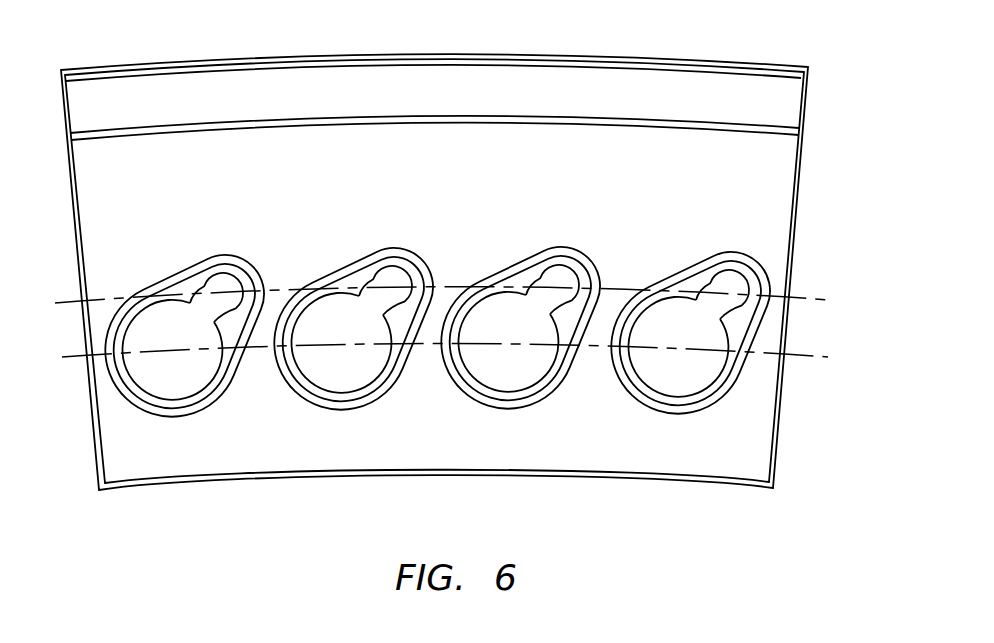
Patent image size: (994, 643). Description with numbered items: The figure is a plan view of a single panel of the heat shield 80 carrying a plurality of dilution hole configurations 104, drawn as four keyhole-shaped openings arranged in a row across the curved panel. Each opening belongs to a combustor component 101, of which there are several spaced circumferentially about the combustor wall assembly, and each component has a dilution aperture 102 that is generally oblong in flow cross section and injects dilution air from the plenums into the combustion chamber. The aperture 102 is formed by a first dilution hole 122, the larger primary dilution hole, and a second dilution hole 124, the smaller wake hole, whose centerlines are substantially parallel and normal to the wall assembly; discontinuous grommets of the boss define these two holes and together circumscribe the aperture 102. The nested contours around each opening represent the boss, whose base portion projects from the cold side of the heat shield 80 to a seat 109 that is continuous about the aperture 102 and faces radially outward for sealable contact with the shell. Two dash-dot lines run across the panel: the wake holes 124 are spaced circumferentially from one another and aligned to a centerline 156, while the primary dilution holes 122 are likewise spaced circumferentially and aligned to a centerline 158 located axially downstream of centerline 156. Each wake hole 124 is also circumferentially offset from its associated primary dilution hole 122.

The heat shield 80 is at (772, 173).
The combustor component 101 is at (358, 318).
The dilution aperture 102 is at (530, 332).
The dilution hole configuration 104 is at (650, 311).
The seat 109 is at (180, 280).
The first dilution hole 122 is at (345, 362).
The second dilution hole 124 is at (393, 277).
The centerline 156 is at (822, 300).
The centerline 158 is at (817, 360).